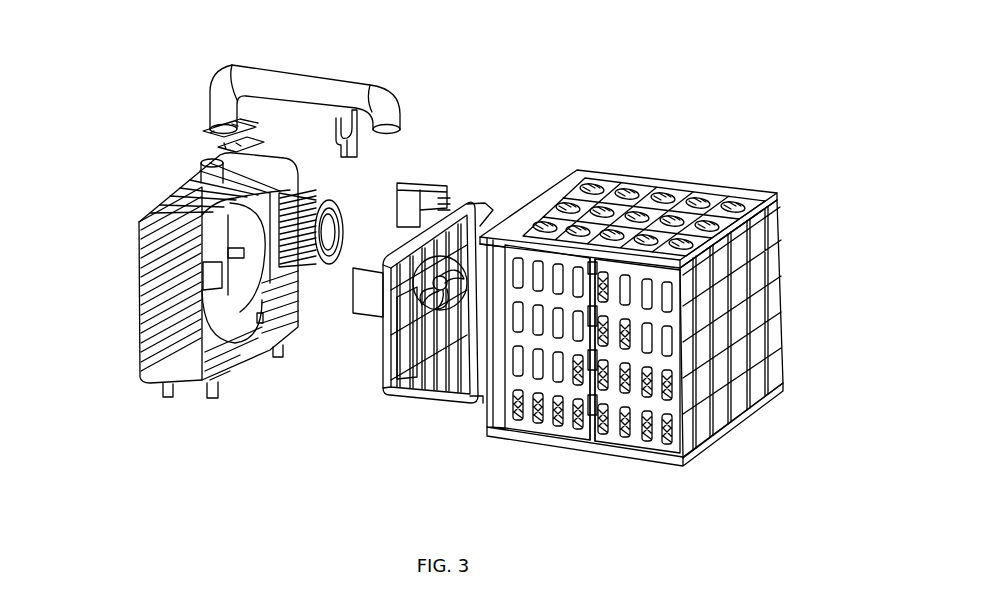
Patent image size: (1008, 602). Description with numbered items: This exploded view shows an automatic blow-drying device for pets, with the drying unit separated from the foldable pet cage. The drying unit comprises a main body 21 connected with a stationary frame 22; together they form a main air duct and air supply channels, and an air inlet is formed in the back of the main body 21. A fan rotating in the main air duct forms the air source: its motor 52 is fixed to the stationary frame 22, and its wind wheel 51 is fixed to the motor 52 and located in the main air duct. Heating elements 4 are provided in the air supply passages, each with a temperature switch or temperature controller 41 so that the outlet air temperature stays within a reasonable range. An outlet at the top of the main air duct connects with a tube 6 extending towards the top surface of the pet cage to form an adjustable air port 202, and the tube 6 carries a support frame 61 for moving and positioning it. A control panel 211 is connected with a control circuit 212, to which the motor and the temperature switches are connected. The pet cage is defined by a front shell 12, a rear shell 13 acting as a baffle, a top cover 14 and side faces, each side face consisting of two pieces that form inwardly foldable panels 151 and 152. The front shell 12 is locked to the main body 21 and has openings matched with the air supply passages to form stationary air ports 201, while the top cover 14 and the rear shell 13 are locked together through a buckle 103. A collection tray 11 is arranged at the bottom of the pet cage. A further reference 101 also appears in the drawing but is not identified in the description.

The tube 6 is at (310, 72).
The support frame 61 is at (357, 143).
The control panel 211 is at (207, 133).
The control circuit 212 is at (223, 145).
The adjustable air port 202 is at (201, 163).
The main body 21 is at (163, 293).
The wind wheel 51 is at (331, 203).
The heating elements 4 is at (434, 187).
The temperature switch or temperature controller 41 is at (420, 188).
The stationary frame 22 is at (468, 203).
The motor 52 is at (478, 208).
The stationary air ports 201 is at (490, 227).
The front shell 12 is at (567, 193).
The clip 101 is at (595, 183).
The top cover 14 is at (670, 207).
The buckle 103 is at (780, 220).
The rear shell 13 is at (763, 357).
The panel 151 is at (553, 420).
The panel 152 is at (640, 438).
The collection tray 11 is at (573, 443).